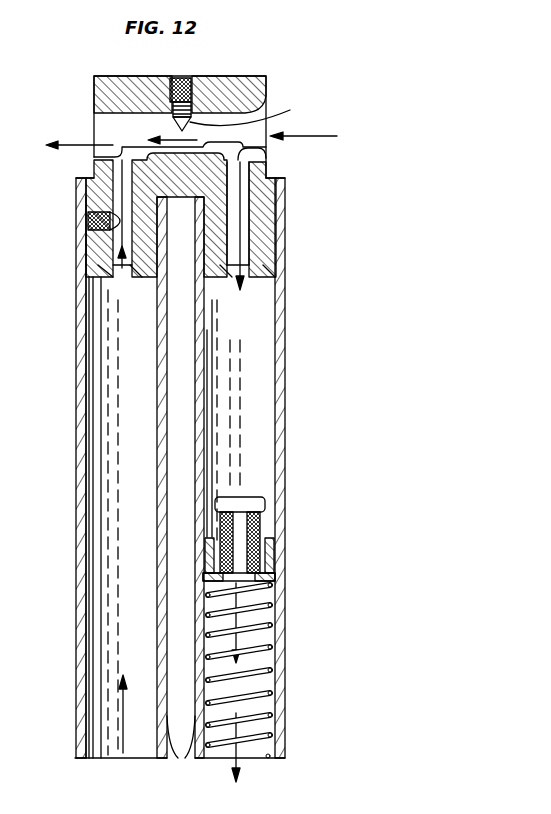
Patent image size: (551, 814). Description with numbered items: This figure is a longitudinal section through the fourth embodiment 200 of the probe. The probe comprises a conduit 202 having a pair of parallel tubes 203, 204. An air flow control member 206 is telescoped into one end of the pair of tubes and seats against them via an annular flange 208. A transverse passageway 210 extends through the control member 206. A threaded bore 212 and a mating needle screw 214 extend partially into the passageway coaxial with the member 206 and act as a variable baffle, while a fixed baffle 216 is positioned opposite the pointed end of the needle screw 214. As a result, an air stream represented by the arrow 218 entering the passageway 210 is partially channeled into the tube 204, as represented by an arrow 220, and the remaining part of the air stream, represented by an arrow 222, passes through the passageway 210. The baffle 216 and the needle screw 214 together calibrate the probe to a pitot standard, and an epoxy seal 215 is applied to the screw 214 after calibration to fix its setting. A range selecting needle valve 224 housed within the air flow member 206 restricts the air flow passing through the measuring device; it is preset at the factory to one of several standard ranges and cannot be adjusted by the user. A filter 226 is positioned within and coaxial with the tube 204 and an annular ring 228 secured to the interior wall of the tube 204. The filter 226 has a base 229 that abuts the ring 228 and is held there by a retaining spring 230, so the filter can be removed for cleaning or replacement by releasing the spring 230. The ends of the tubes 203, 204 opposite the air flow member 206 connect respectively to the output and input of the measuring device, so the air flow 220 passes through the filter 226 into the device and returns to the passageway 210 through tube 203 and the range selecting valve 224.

The fourth embodiment of the probe 200 is at (64, 291).
The conduit 202 is at (176, 751).
The tube 203 is at (108, 321).
The tube 204 is at (265, 283).
The air flow control member 206 is at (270, 65).
The annular flange 208 is at (77, 185).
The transverse passageway 210 is at (103, 117).
The threaded bore 212 is at (195, 95).
The needle screw 214 is at (255, 114).
The epoxy seal 215 is at (188, 76).
The fixed baffle 216 is at (262, 158).
The arrow representing the air stream 218 is at (320, 136).
The arrow representing channeled air flow 220 is at (179, 472).
The arrow representing remaining air stream 222 is at (121, 192).
The range selecting needle valve 224 is at (87, 237).
The filter 226 is at (262, 522).
The annular ring 228 is at (272, 560).
The base 229 is at (252, 590).
The retaining spring 230 is at (262, 648).